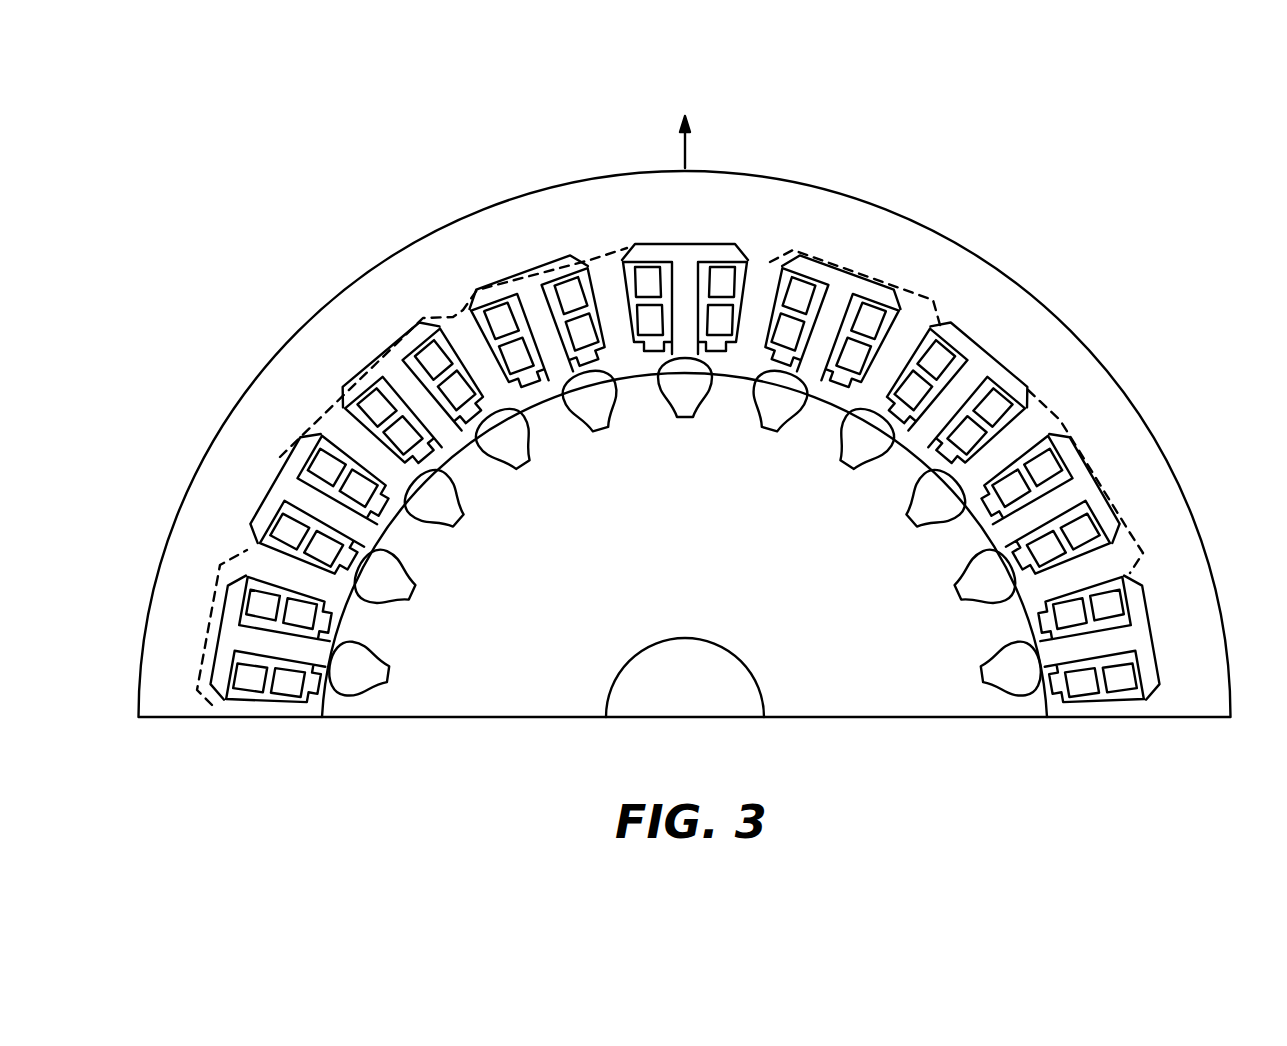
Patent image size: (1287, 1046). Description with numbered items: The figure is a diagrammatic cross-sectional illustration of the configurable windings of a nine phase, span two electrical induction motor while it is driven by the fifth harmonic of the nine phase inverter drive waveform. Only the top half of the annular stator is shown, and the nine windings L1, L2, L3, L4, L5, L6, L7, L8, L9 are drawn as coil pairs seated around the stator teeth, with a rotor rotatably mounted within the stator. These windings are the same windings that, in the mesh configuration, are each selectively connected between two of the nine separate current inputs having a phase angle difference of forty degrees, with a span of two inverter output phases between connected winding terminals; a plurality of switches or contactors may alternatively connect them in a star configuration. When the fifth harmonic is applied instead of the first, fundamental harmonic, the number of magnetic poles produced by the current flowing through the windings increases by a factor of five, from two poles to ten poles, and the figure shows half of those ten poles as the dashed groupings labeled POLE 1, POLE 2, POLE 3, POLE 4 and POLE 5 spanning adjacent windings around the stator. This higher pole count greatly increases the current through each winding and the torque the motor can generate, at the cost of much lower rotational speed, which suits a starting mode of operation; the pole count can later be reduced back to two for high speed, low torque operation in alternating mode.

The winding L1 is at (1158, 642).
The winding L2 is at (1103, 480).
The winding L3 is at (1000, 353).
The winding L4 is at (853, 270).
The winding L5 is at (690, 243).
The winding L6 is at (527, 267).
The winding L7 is at (388, 350).
The winding L8 is at (290, 478).
The winding L9 is at (227, 630).
The magnetic pole POLE 1 is at (1120, 521).
The magnetic pole POLE 2 is at (919, 316).
The magnetic pole POLE 3 is at (634, 227).
The magnetic pole POLE 4 is at (405, 318).
The magnetic pole POLE 5 is at (243, 561).